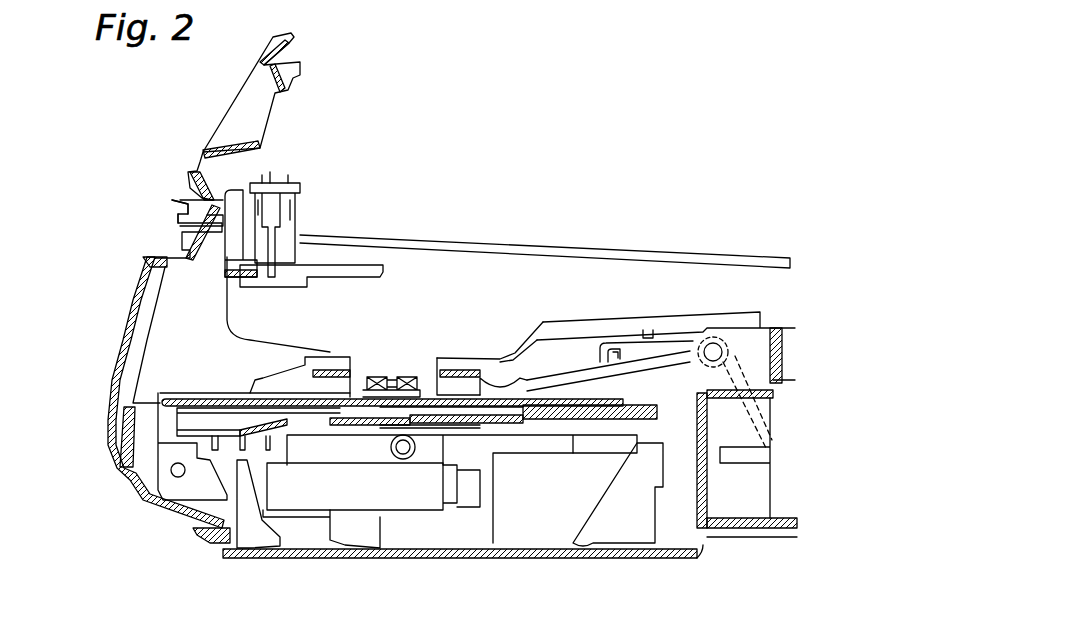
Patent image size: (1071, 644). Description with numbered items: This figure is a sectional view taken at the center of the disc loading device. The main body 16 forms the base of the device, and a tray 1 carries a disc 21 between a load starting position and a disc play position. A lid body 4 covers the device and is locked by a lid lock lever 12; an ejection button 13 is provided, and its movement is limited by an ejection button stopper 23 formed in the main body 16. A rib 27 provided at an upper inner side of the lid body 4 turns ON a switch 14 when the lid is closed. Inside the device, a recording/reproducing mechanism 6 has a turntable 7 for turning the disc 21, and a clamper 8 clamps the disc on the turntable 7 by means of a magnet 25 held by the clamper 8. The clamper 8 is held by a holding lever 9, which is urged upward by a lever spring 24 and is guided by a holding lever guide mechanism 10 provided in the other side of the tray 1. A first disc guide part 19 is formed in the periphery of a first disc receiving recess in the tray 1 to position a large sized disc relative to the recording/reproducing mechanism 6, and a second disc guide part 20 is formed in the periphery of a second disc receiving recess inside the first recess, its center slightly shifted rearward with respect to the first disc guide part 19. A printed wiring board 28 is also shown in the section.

The tray 1 is at (203, 392).
The lid body 4 is at (140, 317).
The recording/reproducing mechanism 6 is at (363, 447).
The turntable 7 is at (357, 357).
The clamper 8 is at (421, 366).
The holding lever 9 is at (497, 360).
The holding lever guide mechanism 10 is at (563, 348).
The lid lock lever 12 is at (203, 197).
The ejection button 13 is at (180, 220).
The switch 14 is at (273, 213).
The main body 16 is at (236, 121).
The first disc guide part 19 is at (603, 419).
The second disc guide part 20 is at (521, 421).
The disc 21 is at (227, 397).
The ejection button stopper 23 is at (230, 188).
The lever spring 24 is at (673, 337).
The magnet 25 is at (413, 377).
The rib 27 is at (258, 287).
The printed wiring board 28 is at (387, 238).